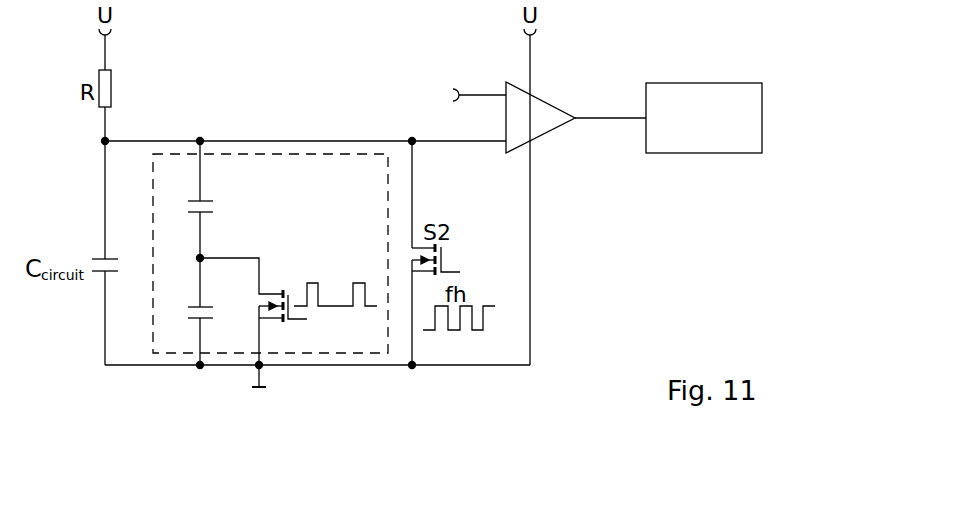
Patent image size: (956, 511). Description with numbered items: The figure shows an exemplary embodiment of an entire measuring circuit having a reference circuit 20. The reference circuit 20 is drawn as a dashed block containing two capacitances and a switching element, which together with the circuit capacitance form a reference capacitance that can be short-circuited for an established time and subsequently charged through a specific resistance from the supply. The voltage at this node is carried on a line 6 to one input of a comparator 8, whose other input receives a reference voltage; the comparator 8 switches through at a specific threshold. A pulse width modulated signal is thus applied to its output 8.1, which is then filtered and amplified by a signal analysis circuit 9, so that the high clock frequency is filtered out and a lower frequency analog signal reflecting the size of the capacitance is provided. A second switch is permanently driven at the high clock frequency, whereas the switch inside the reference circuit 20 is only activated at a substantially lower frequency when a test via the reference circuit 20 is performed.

The reference circuit 20 is at (262, 154).
The measurement signal line 6 is at (468, 141).
The comparator 8 is at (547, 108).
The output 8.1 is at (602, 118).
The signal analysis circuit 9 is at (686, 102).